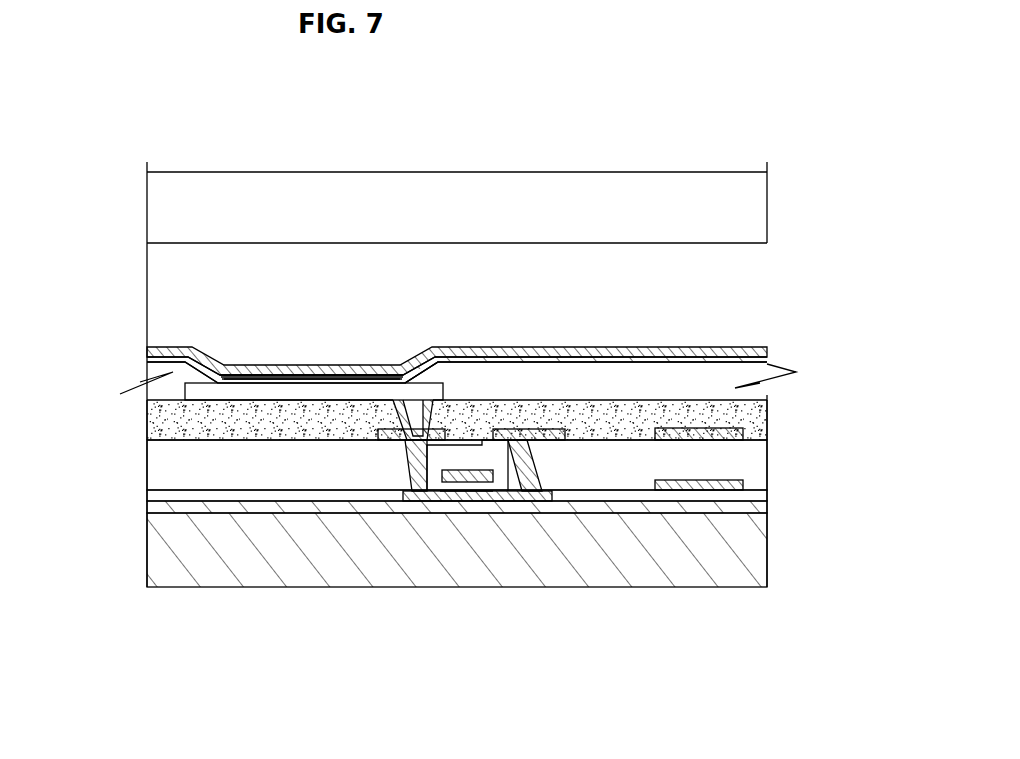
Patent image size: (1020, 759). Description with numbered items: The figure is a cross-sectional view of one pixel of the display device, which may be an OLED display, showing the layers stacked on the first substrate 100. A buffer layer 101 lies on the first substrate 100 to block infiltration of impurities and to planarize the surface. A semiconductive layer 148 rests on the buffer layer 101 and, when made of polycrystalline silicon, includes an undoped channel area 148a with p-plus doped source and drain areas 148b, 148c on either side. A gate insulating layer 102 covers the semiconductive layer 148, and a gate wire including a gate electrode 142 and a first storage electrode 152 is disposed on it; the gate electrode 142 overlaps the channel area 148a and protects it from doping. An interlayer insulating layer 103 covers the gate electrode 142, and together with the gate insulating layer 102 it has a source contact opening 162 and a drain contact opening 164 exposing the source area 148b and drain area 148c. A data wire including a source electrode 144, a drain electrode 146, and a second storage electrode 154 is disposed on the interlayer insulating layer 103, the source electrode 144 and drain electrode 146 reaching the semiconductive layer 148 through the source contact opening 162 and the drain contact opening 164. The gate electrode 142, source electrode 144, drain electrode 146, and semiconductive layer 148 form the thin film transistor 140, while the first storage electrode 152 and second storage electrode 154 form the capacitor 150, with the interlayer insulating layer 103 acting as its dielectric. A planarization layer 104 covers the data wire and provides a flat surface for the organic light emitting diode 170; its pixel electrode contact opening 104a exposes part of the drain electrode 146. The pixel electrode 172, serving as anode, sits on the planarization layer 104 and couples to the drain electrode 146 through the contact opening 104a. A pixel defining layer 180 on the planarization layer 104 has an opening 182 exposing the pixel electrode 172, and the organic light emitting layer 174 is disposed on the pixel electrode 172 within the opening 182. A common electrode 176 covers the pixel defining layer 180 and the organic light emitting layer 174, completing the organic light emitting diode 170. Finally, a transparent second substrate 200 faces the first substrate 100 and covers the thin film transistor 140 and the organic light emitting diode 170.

The first substrate 100 is at (165, 548).
The buffer layer 101 is at (147, 508).
The gate insulating layer 102 is at (147, 495).
The interlayer insulating layer 103 is at (160, 462).
The planarization layer 104 is at (414, 283).
The pixel electrode contact opening 104a is at (423, 398).
The thin film transistor 140 is at (486, 584).
The gate electrode 142 is at (478, 470).
The source electrode 144 is at (556, 496).
The drain electrode 146 is at (387, 433).
The semiconductive layer 148 is at (471, 558).
The channel area 148a is at (458, 501).
The source area 148b is at (532, 501).
The drain area 148c is at (408, 450).
The capacitor 150 is at (701, 564).
The first storage electrode 152 is at (724, 492).
The second storage electrode 154 is at (676, 442).
The source contact opening 162 is at (582, 440).
The drain contact opening 164 is at (413, 368).
The organic light emitting diode 170 is at (457, 232).
The pixel electrode 172 is at (241, 388).
The organic light emitting layer 174 is at (293, 388).
The common electrode 176 is at (343, 388).
The pixel defining layer 180 is at (658, 385).
The opening 182 is at (490, 398).
The second substrate 200 is at (740, 207).